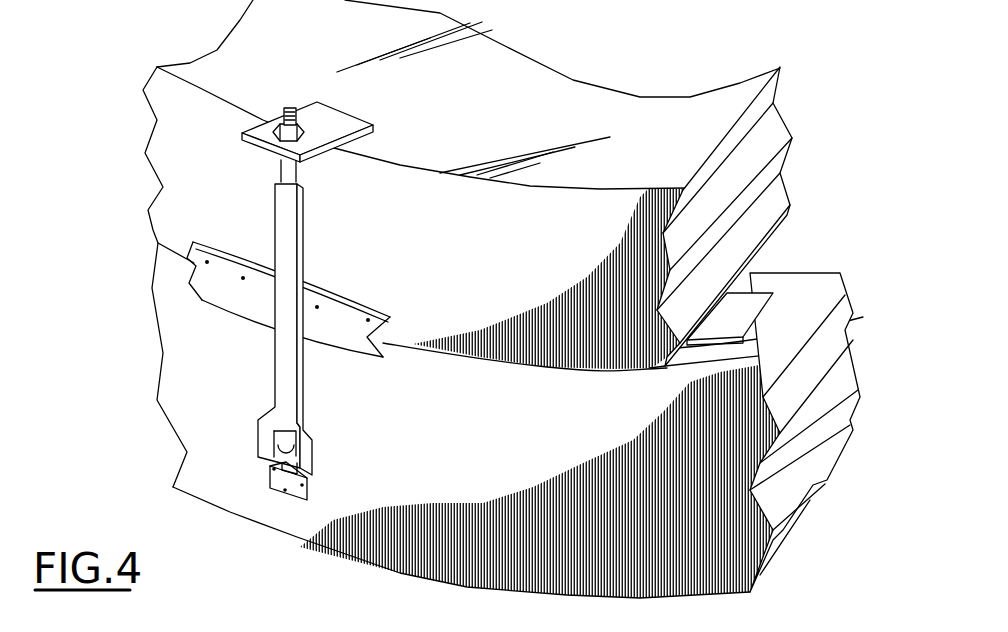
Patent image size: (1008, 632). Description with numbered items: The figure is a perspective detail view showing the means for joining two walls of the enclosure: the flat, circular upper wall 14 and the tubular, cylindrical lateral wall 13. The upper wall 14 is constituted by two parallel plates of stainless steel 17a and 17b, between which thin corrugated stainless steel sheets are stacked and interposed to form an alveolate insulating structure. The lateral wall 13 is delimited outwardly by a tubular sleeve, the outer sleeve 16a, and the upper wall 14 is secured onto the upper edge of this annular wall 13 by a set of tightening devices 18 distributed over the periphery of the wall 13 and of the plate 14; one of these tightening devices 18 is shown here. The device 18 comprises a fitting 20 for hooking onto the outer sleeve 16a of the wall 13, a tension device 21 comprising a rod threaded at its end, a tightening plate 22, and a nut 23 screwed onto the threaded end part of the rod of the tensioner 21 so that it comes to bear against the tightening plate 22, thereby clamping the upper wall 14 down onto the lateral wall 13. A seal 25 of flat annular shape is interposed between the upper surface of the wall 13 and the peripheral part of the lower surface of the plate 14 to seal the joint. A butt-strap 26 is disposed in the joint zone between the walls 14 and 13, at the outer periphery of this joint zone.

The tubular lateral wall 13 is at (792, 315).
The upper wall 14 is at (582, 106).
The outer sleeve 16a is at (518, 457).
The stainless steel plate 17a is at (707, 113).
The stainless steel plate 17b is at (834, 432).
The tightening device 18 is at (252, 396).
The fitting 20 is at (278, 485).
The tension device 21 is at (287, 340).
The tightening plate 22 is at (345, 125).
The nut 23 is at (305, 128).
The seal 25 is at (747, 302).
The butt-strap 26 is at (213, 285).